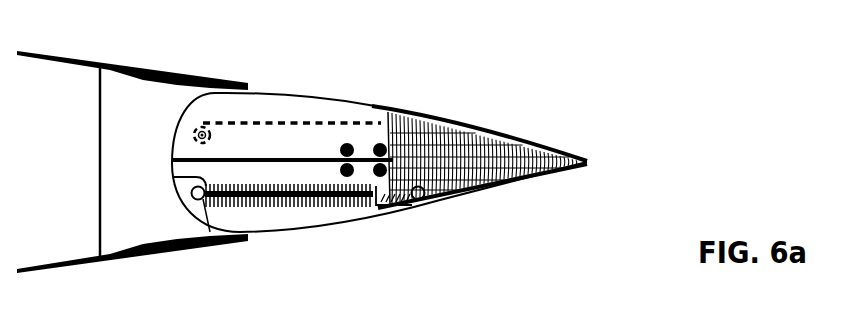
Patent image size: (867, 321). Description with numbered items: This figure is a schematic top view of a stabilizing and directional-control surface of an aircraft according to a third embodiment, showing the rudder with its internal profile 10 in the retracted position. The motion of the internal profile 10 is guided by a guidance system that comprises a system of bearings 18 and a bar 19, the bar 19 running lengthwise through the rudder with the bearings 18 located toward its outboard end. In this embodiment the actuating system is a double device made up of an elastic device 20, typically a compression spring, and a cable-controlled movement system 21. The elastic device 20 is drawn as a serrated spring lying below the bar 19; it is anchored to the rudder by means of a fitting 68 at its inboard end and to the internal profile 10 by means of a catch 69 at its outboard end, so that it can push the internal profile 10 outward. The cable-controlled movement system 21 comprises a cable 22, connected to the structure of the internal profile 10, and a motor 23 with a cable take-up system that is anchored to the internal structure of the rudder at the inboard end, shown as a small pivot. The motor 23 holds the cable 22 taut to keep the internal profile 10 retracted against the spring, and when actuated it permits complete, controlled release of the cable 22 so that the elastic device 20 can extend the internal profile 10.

The internal profile 10 is at (543, 143).
The system of bearings 18 is at (381, 207).
The bar 19 is at (294, 158).
The elastic device 20 is at (312, 202).
The cable-controlled movement system 21 is at (239, 118).
The cable 22 is at (349, 125).
The motor with cable take-up system 23 is at (200, 128).
The fitting 68 is at (200, 200).
The catch 69 is at (424, 202).